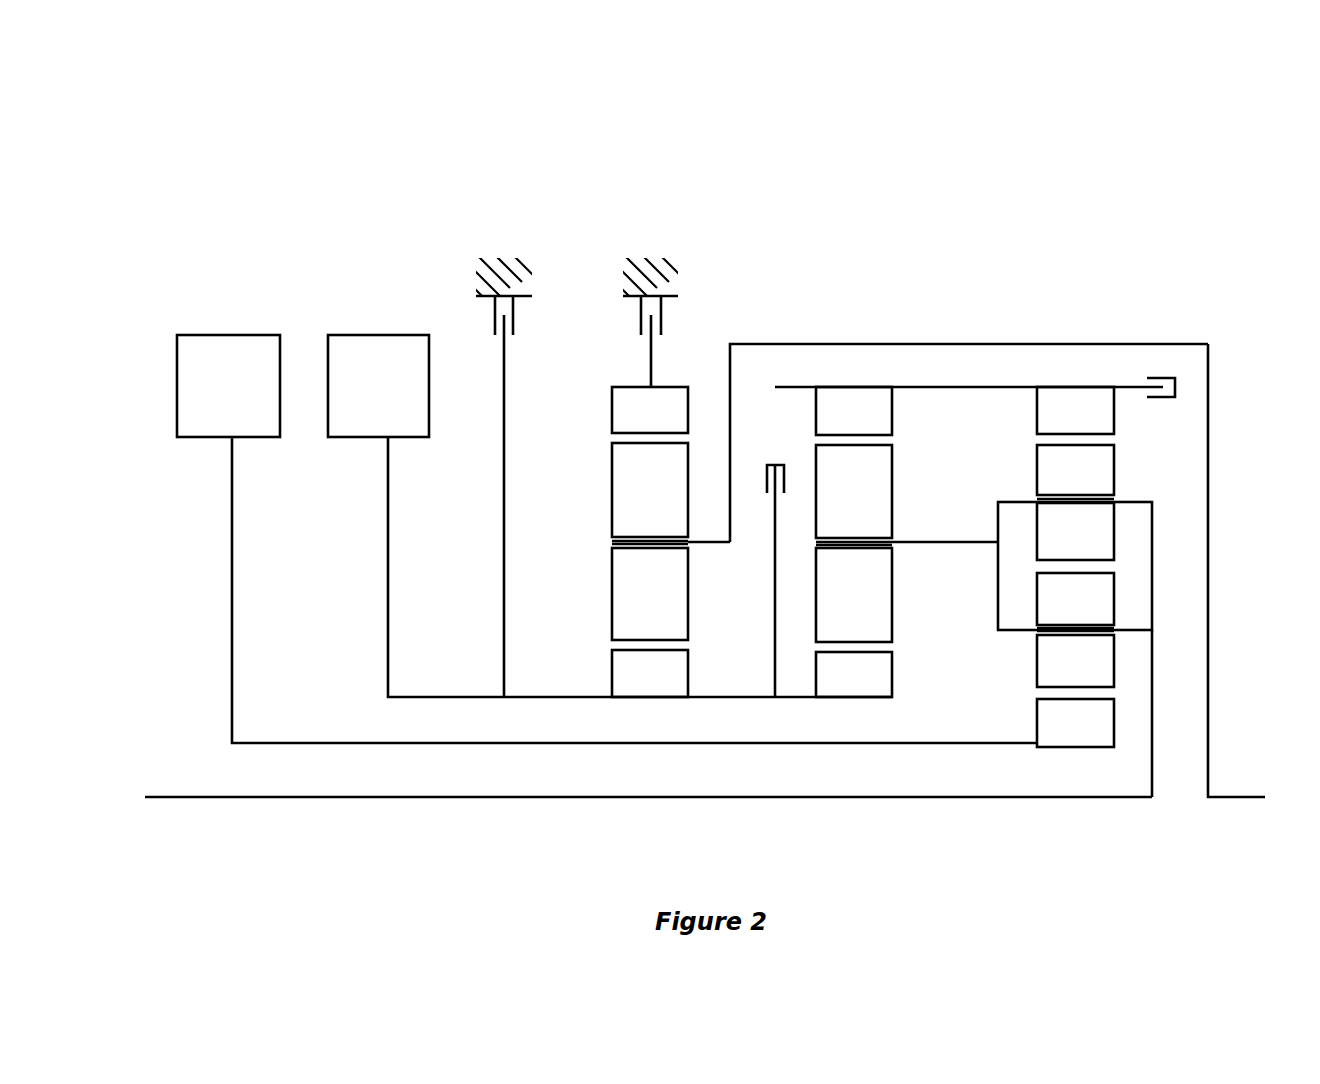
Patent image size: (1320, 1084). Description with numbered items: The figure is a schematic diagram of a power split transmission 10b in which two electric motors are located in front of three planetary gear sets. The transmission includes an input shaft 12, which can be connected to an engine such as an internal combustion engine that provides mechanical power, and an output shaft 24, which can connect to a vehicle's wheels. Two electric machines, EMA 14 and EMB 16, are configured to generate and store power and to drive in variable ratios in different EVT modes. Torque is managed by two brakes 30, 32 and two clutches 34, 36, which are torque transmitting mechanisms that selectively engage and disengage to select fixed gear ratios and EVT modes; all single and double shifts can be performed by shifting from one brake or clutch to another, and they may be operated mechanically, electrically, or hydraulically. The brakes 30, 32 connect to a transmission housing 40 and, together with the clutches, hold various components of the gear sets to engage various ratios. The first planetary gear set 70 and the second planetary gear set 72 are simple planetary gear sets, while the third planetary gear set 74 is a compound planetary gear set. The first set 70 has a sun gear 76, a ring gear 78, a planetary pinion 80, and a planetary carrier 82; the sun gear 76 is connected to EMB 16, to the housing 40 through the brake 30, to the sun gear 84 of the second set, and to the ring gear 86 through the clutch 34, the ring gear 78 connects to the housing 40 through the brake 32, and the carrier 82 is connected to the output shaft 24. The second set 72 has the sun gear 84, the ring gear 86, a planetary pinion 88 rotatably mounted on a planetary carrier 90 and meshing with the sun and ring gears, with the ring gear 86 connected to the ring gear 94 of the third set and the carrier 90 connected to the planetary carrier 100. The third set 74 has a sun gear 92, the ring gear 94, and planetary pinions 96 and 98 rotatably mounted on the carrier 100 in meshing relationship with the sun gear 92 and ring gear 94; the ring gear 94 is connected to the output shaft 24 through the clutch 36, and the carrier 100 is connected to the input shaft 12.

The power split transmission 10b is at (748, 160).
The input shaft 12 is at (240, 797).
The EMA 14 is at (237, 335).
The EMB 16 is at (378, 335).
The output shaft 24 is at (1237, 800).
The brake 30 is at (540, 320).
The brake 32 is at (687, 320).
The clutch 34 is at (758, 485).
The clutch 36 is at (1136, 370).
The transmission housing 40 is at (505, 246).
The first planetary gear set 70 is at (665, 530).
The second planetary gear set 72 is at (883, 502).
The third planetary gear set 74 is at (1075, 532).
The sun gear 76 is at (612, 673).
The ring gear 78 is at (612, 410).
The planetary pinion 80 is at (612, 598).
The planetary carrier 82 is at (698, 540).
The sun gear 84 is at (892, 673).
The ring gear 86 is at (892, 410).
The planetary pinion 88 is at (892, 578).
The planetary carrier 90 is at (925, 541).
The sun gear 92 is at (1075, 748).
The ring gear 94 is at (1037, 410).
The planetary pinion 96 is at (1114, 475).
The planetary pinion 98 is at (1037, 655).
The planetary carrier 100 is at (1152, 563).